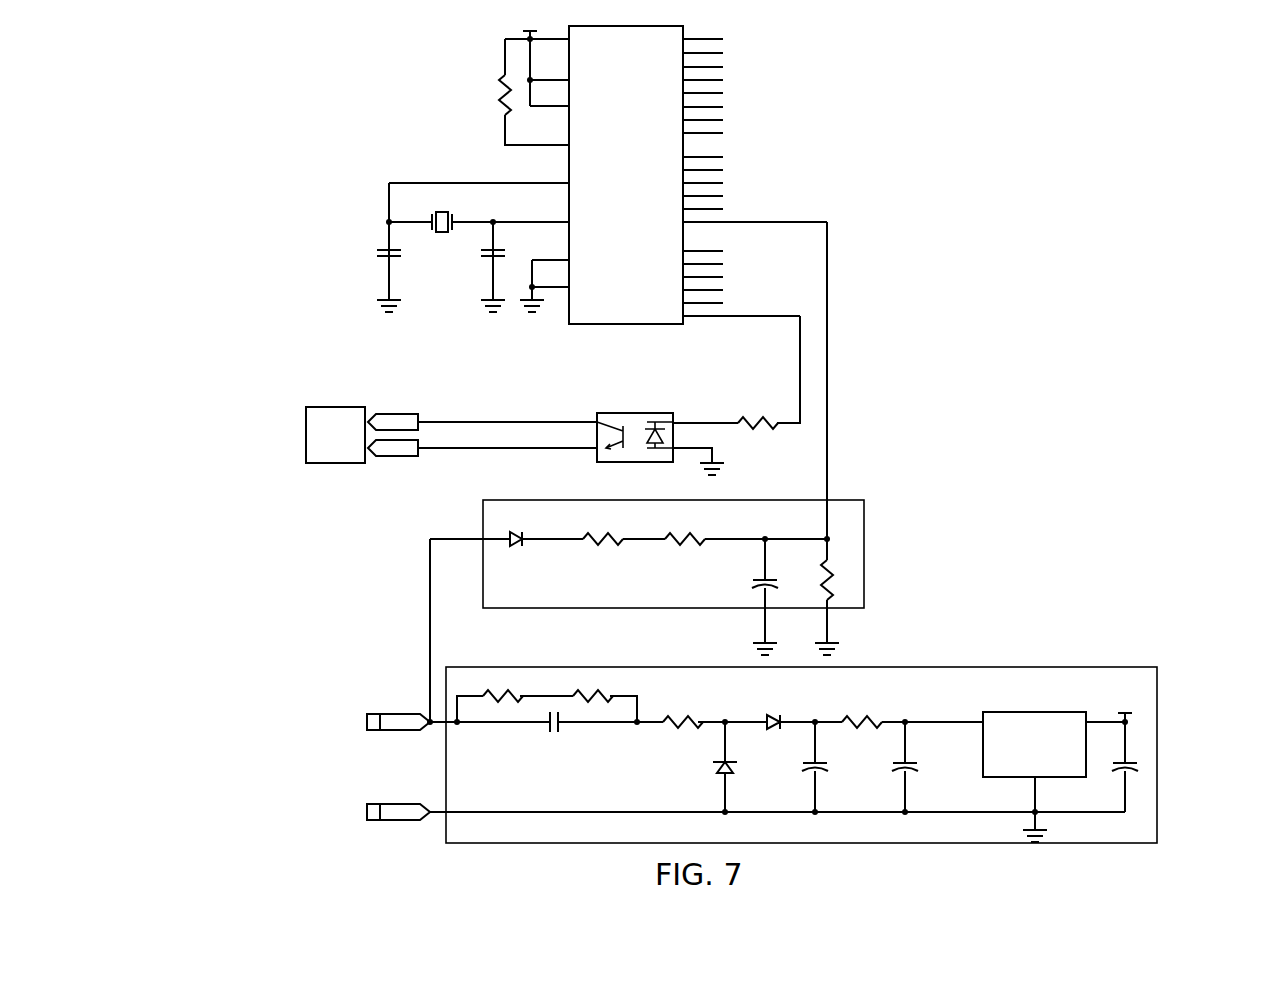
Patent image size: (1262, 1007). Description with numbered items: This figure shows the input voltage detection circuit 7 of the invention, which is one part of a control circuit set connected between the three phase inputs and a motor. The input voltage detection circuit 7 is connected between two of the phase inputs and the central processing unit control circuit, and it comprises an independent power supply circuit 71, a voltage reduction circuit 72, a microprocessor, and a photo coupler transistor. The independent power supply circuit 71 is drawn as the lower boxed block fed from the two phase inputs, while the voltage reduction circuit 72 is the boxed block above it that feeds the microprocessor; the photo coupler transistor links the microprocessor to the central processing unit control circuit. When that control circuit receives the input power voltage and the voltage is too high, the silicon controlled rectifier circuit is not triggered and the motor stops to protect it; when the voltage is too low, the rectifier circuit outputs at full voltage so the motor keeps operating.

The input voltage detection circuit 7 is at (286, 191).
The independent power supply circuit 71 is at (1157, 700).
The voltage reduction circuit 72 is at (864, 528).